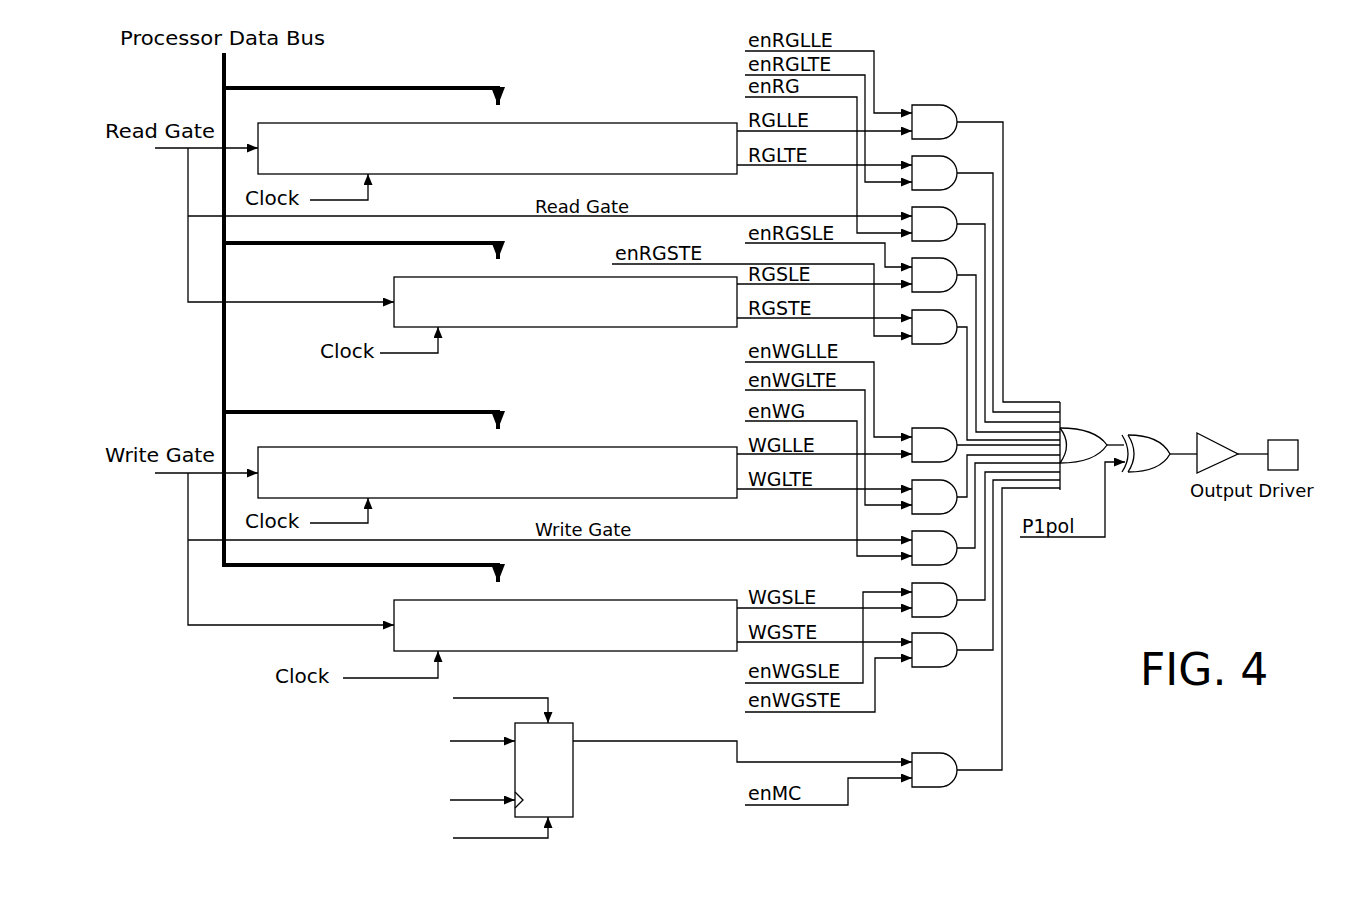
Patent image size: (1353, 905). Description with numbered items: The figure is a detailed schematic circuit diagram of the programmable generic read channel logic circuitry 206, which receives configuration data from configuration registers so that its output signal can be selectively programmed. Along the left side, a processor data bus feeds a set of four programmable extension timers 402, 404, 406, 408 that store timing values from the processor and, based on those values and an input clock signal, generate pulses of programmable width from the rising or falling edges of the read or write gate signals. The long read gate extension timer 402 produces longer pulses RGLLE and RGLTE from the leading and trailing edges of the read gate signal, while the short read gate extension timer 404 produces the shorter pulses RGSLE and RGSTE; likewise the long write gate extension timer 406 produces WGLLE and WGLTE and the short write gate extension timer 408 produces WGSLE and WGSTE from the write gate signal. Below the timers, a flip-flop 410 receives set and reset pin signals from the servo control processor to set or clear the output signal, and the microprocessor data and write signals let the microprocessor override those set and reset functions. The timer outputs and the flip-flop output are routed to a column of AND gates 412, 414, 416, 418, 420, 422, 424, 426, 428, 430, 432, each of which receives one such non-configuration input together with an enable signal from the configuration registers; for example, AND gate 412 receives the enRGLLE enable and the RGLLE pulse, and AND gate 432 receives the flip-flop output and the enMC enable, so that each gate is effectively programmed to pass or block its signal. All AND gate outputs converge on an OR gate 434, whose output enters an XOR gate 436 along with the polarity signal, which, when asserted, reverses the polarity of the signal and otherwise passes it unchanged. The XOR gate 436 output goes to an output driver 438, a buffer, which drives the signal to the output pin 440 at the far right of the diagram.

The read channel logic circuitry 206 is at (1192, 100).
The long read gate extension timer 402 is at (293, 130).
The short read gate extension timer 404 is at (530, 327).
The long write gate extension timer 406 is at (293, 453).
The short write gate extension timer 408 is at (395, 601).
The flip-flop 410 is at (573, 728).
The AND gate 412 is at (935, 112).
The AND gate 414 is at (935, 162).
The AND gate 416 is at (935, 213).
The AND gate 418 is at (935, 264).
The AND gate 420 is at (921, 338).
The AND gate 422 is at (932, 433).
The AND gate 424 is at (928, 490).
The AND gate 426 is at (928, 540).
The AND gate 428 is at (928, 592).
The AND gate 430 is at (928, 642).
The AND gate 432 is at (928, 760).
The OR gate 434 is at (1080, 440).
The XOR gate 436 is at (1140, 441).
The output driver 438 is at (1207, 440).
The output pin 440 is at (1282, 440).